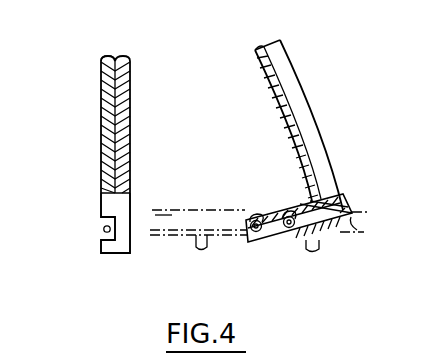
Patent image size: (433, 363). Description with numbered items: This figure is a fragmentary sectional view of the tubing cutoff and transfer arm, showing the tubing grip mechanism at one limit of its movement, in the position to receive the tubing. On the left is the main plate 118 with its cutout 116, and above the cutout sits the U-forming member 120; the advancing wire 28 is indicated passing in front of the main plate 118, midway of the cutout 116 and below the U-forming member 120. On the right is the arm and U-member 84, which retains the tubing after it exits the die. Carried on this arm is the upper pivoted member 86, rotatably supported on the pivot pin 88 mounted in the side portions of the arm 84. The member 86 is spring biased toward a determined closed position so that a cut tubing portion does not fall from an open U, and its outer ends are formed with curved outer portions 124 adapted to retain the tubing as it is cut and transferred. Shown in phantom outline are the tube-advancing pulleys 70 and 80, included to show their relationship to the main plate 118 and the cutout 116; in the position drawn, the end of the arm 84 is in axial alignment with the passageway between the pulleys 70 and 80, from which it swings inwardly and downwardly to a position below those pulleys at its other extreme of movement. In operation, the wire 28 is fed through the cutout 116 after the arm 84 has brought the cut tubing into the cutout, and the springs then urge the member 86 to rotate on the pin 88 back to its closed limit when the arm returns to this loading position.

The advancing wire 28 is at (104, 227).
The grooved pulley 70 is at (172, 213).
The grooved pulley 80 is at (358, 213).
The arm and U-member 84 is at (330, 148).
The upper pivoted member 86 is at (290, 215).
The pivot pin 88 is at (288, 234).
The cutout 116 is at (108, 207).
The main plate 118 is at (133, 70).
The U-forming member 120 is at (107, 58).
The curved outer portions 124 is at (257, 219).